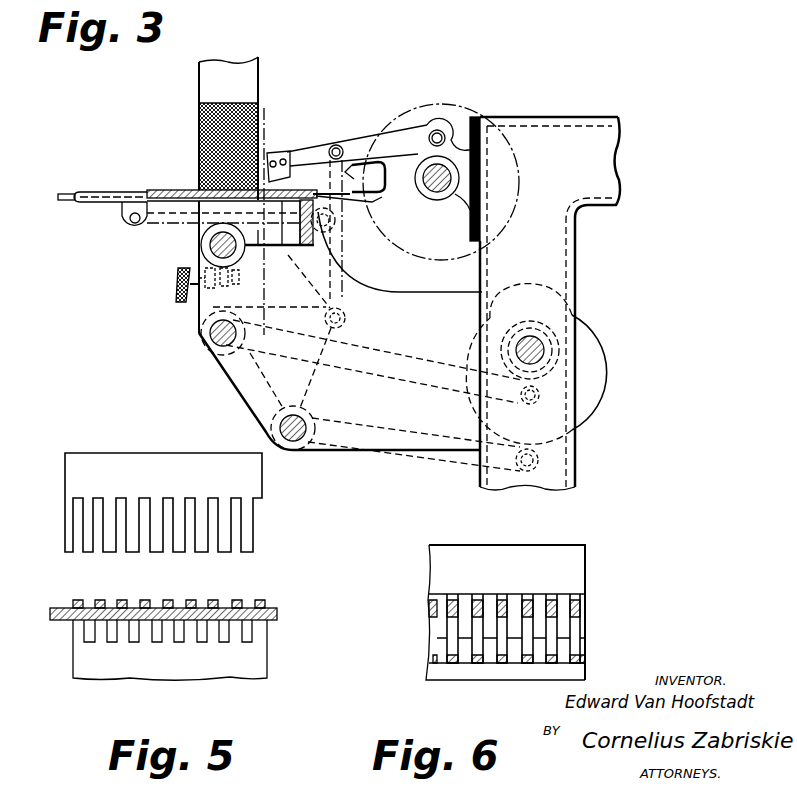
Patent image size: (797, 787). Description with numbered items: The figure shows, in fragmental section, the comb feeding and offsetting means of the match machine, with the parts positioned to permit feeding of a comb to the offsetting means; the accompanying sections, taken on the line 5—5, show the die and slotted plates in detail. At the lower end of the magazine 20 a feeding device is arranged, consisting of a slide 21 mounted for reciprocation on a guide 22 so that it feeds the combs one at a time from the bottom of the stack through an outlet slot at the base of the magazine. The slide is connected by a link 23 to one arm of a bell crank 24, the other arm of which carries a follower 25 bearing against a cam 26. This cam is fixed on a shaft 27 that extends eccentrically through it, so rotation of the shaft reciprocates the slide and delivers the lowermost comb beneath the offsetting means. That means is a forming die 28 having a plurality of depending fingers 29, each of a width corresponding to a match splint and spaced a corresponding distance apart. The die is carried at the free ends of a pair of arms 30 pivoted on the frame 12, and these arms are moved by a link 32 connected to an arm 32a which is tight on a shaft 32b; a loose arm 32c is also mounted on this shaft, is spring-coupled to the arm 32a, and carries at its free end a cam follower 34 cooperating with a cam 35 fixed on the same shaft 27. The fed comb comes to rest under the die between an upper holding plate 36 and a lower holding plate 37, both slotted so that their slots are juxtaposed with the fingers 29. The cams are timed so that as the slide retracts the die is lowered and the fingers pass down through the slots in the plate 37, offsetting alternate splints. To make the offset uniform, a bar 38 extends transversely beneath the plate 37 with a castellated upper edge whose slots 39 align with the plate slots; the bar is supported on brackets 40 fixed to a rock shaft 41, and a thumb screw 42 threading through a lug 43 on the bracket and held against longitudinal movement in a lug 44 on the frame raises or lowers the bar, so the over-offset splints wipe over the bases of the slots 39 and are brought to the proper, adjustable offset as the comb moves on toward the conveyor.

In FIG. 3, the frame 5 is at (314, 268).
In FIG. 3, the frame 12 is at (612, 152).
In FIG. 3, the magazine 20 is at (205, 76).
In FIG. 3, the slide 21 is at (137, 190).
In FIG. 3, the guide 22 is at (70, 203).
In FIG. 3, the link 23 is at (168, 226).
In FIG. 3, the bell crank 24 is at (323, 404).
In FIG. 3, the follower 25 is at (540, 460).
In FIG. 3, the cam 26 is at (597, 390).
In FIG. 3, the shaft 27 is at (540, 350).
In FIG. 3, the forming die 28 is at (284, 152).
In FIG. 5, the forming die 28 is at (110, 458).
In FIG. 6, the forming die 28 is at (575, 575).
In FIG. 5, the depending fingers 29 is at (200, 500).
In FIG. 6, the depending fingers 29 is at (492, 628).
In FIG. 3, the arms 30 is at (416, 108).
In FIG. 3, the link 32 is at (347, 316).
In FIG. 3, the arm 32a is at (255, 355).
In FIG. 3, the shaft 32b is at (218, 350).
In FIG. 3, the loose arm 32c is at (392, 355).
In FIG. 3, the cam follower 34 is at (527, 405).
In FIG. 3, the cam 35 is at (575, 305).
In FIG. 3, the upper holding plate 36 is at (340, 145).
In FIG. 5, the upper holding plate 36 is at (268, 604).
In FIG. 3, the lower holding plate 37 is at (296, 247).
In FIG. 3, the bar 38 is at (328, 241).
In FIG. 5, the bar 38 is at (218, 672).
In FIG. 5, the slots 39 is at (135, 633).
In FIG. 3, the brackets 40 is at (258, 247).
In FIG. 3, the rock shaft 41 is at (221, 247).
In FIG. 3, the thumb screw 42 is at (178, 292).
In FIG. 3, the lug 43 is at (215, 290).
In FIG. 3, the lug 44 is at (232, 285).